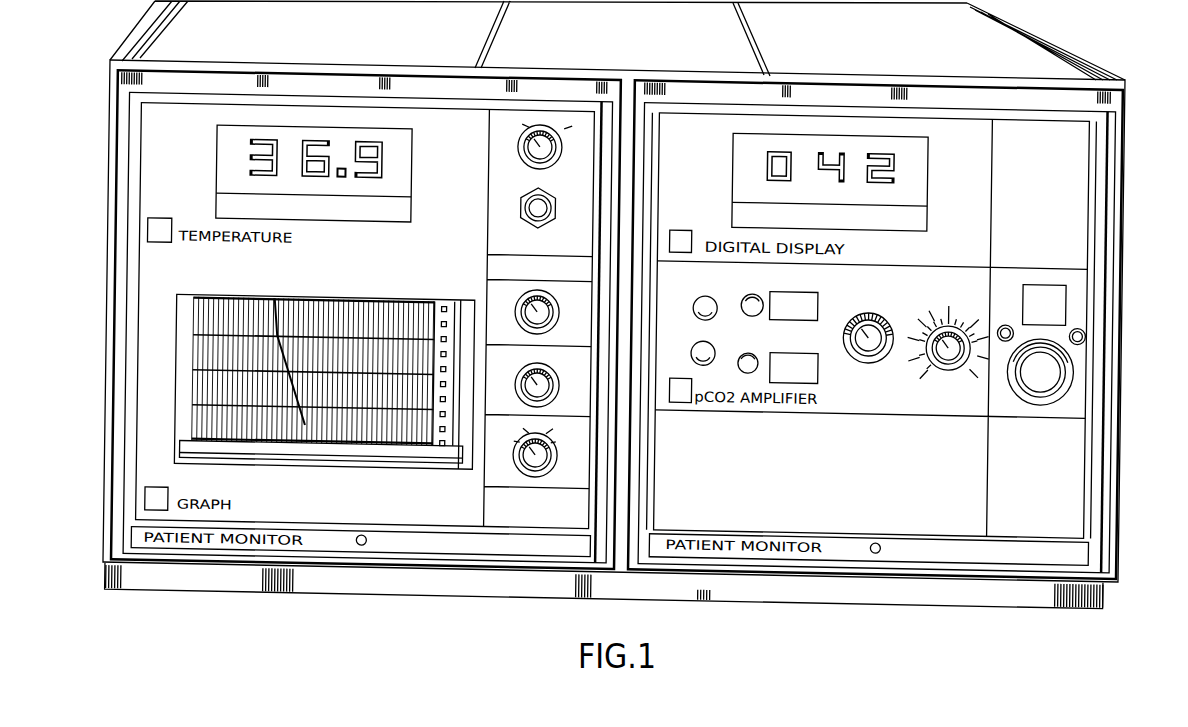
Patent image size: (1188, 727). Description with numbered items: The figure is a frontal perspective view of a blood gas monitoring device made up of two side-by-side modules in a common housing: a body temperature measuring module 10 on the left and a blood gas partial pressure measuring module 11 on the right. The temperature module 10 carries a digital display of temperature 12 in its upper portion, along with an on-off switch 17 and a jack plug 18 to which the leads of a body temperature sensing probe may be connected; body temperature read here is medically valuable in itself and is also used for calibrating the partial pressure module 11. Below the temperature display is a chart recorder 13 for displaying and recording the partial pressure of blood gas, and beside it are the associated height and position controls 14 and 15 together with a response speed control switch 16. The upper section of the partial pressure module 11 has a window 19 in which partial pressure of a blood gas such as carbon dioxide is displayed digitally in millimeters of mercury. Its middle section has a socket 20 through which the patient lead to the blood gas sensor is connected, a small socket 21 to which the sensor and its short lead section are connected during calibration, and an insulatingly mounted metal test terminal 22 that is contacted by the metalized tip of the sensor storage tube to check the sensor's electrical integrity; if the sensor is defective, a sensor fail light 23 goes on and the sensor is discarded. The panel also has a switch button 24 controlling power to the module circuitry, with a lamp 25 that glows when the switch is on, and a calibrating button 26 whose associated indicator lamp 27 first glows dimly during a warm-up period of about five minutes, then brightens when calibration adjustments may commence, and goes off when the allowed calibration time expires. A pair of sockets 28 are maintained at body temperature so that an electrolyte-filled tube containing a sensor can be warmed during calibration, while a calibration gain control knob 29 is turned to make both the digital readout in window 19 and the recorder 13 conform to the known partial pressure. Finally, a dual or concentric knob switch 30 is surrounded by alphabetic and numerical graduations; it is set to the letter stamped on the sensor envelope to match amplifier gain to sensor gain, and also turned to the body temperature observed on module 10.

The body temperature measuring module 10 is at (107, 233).
The blood gas partial pressure measuring module 11 is at (1125, 178).
The digital display of temperature 12 is at (219, 149).
The chart recorder 13 is at (198, 400).
The height control 14 is at (556, 297).
The position control 15 is at (556, 369).
The response speed control switch 16 is at (546, 462).
The on-off switch 17 is at (541, 131).
The jack plug 18 is at (532, 199).
The window 19 is at (920, 154).
The socket 20 is at (1048, 366).
The small socket 21 is at (1007, 302).
The metal test terminal 22 is at (1094, 316).
The sensor fail light 23 is at (1062, 287).
The switch button 24 is at (811, 279).
The lamp 25 is at (754, 282).
The calibrating button 26 is at (787, 340).
The indicator lamp 27 is at (753, 342).
The sockets 28 is at (704, 286).
The calibration gain control knob 29 is at (872, 305).
The dual or concentric knob switch 30 is at (954, 308).